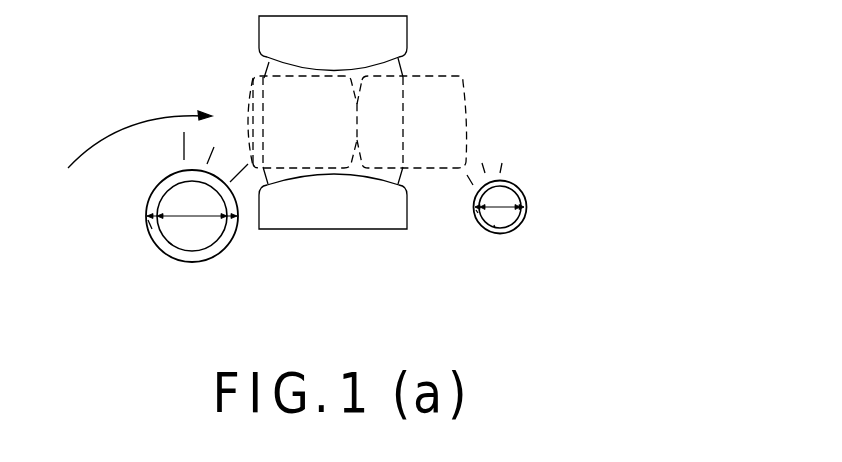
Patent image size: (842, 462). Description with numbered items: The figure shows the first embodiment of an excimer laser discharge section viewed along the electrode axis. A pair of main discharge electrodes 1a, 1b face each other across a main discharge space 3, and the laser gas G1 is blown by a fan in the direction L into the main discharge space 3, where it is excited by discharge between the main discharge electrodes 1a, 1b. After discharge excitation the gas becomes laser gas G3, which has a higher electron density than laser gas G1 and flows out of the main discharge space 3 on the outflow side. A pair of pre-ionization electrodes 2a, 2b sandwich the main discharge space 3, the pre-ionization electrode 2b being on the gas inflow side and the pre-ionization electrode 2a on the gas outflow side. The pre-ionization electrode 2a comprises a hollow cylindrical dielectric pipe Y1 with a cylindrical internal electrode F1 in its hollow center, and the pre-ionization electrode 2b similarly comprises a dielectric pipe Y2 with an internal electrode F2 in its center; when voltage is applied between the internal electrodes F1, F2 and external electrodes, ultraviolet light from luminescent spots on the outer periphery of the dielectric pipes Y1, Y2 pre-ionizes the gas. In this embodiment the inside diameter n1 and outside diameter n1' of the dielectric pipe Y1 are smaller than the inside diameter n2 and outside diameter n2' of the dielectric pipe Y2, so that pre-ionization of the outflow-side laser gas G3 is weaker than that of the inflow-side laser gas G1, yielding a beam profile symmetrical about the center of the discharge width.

The main discharge electrode 1a is at (378, 36).
The main discharge electrode 1b is at (330, 218).
The main discharge space 3 is at (268, 62).
The laser gas G1 is at (252, 78).
The laser gas G3 is at (458, 91).
The direction L is at (140, 132).
The pre-ionization electrode 2a is at (533, 208).
The pre-ionization electrode 2b is at (187, 264).
The dielectric pipe Y1 is at (510, 228).
The dielectric pipe Y2 is at (155, 199).
The inside diameter n1 is at (514, 183).
The outside diameter n1' is at (456, 234).
The inside diameter n2 is at (193, 257).
The outside diameter n2' is at (118, 236).
The internal electrode F1 is at (494, 225).
The internal electrode F2 is at (172, 238).